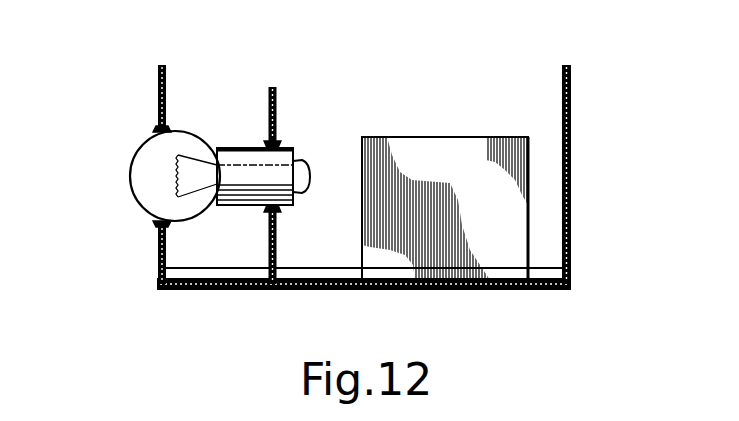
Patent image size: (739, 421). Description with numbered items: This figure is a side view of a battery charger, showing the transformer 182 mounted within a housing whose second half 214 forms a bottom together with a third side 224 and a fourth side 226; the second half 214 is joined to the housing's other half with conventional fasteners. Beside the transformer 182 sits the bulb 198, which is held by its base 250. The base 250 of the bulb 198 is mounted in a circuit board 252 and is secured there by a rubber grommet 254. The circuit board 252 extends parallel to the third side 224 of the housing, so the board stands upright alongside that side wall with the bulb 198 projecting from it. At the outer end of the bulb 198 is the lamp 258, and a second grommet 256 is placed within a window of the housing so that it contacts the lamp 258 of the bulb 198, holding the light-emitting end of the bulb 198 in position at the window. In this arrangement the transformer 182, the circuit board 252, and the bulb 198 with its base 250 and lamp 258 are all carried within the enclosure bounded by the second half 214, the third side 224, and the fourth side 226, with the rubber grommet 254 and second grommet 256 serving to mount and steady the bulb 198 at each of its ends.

The transformer 182 is at (437, 137).
The bulb 198 is at (233, 148).
The second half 214 is at (308, 291).
The third side 224 is at (157, 252).
The fourth side 226 is at (571, 113).
The base 250 is at (284, 143).
The circuit board 252 is at (277, 87).
The rubber grommet 254 is at (281, 209).
The second grommet 256 is at (156, 128).
The lamp 258 is at (131, 181).